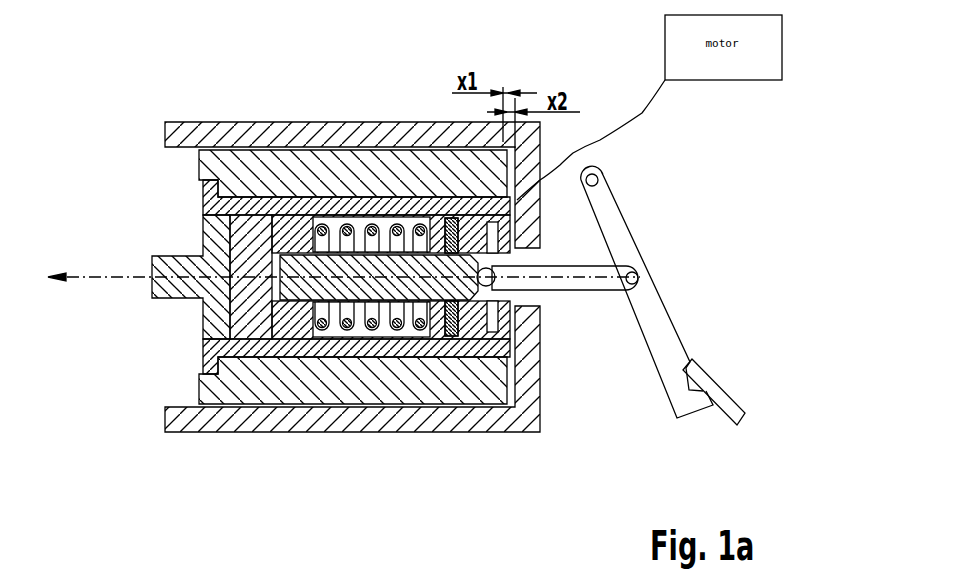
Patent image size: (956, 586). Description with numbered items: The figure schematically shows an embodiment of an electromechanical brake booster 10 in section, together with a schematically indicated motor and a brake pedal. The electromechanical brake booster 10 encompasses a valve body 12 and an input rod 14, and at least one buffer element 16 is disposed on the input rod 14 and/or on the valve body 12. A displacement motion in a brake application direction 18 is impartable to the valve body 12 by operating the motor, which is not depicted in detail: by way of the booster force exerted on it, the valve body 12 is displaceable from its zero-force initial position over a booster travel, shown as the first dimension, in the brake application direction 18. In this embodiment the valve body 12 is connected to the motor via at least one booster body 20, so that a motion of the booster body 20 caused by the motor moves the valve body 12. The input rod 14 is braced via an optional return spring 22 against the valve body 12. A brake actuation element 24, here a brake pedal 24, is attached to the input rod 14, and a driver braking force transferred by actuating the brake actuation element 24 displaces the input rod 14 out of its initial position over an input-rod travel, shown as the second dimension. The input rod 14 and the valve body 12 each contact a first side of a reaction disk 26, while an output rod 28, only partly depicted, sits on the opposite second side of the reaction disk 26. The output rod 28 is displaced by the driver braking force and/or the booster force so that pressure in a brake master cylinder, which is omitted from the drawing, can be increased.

The electromechanical brake booster 10 is at (122, 148).
The valve body 12 is at (520, 350).
The input rod 14 is at (500, 291).
The buffer element 16 is at (452, 336).
The brake application direction 18 is at (90, 277).
The booster body 20 is at (292, 393).
The return spring 22 is at (385, 335).
The brake actuation element 24 is at (618, 232).
The reaction disk 26 is at (250, 328).
The output rod 28 is at (172, 298).